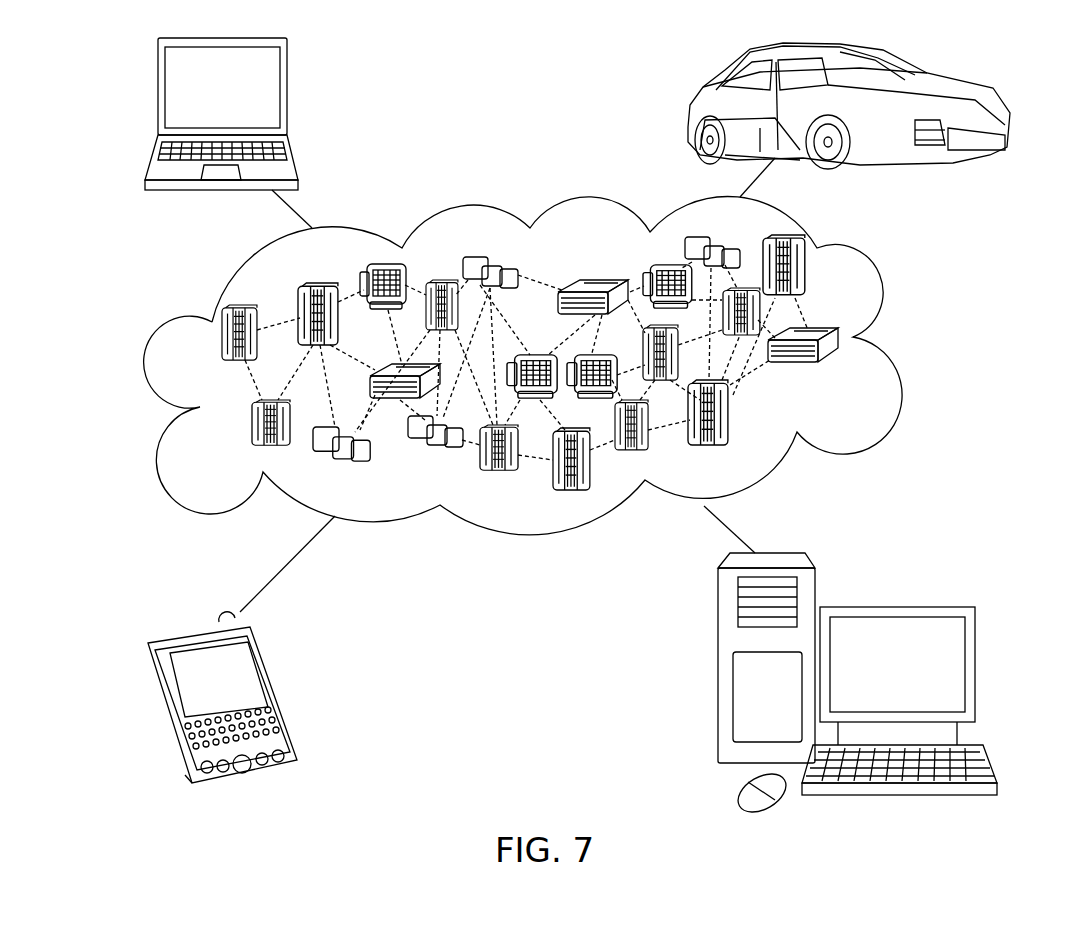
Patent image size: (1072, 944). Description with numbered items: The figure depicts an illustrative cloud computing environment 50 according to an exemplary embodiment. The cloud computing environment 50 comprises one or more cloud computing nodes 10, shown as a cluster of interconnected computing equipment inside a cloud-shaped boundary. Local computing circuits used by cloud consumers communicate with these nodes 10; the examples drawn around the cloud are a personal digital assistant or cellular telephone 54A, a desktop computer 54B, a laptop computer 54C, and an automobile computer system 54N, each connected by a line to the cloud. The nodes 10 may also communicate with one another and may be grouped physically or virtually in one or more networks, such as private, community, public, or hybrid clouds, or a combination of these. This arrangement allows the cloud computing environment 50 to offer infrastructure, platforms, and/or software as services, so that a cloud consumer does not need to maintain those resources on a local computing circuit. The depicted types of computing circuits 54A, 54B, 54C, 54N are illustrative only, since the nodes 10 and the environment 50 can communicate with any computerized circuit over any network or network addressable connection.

The cloud computing node 10 is at (848, 374).
The cloud computing environment 50 is at (897, 343).
The personal digital assistant or cellular telephone 54A is at (280, 692).
The desktop computer 54B is at (895, 603).
The laptop computer 54C is at (285, 98).
The automobile computer system 54N is at (692, 110).